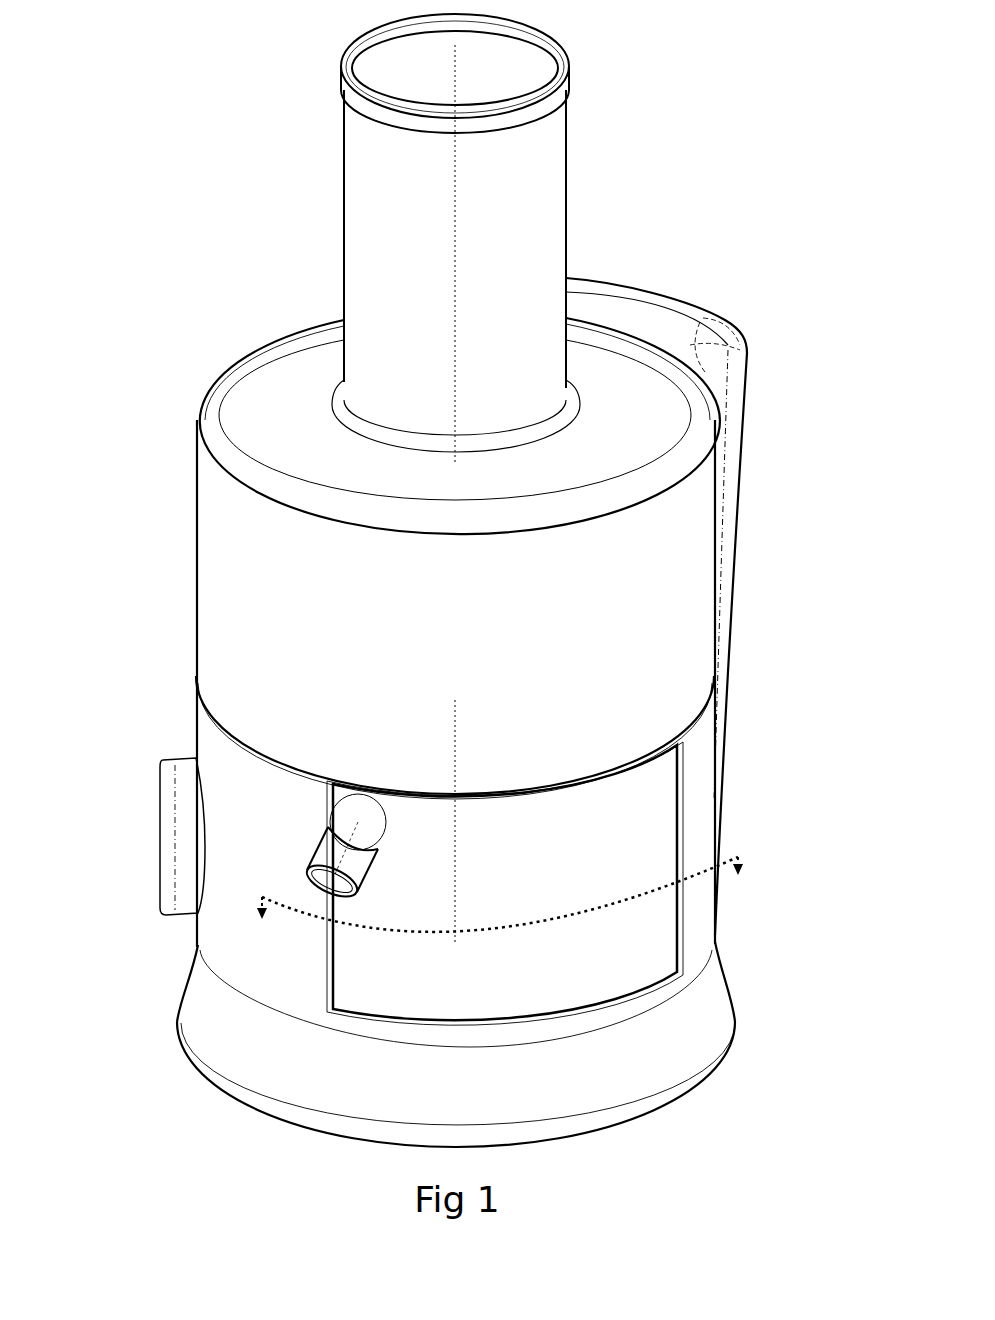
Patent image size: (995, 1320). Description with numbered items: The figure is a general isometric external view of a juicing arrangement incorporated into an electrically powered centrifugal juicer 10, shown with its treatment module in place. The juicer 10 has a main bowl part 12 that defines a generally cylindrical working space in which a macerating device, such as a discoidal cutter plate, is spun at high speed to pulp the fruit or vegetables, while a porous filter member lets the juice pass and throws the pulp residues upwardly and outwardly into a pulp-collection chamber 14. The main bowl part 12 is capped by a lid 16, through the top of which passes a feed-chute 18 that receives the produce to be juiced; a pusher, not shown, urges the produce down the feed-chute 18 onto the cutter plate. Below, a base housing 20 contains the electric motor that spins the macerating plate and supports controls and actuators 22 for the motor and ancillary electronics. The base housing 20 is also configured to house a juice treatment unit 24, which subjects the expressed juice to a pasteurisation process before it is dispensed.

The centrifugal juicer 10 is at (458, 580).
The main bowl part 12 is at (213, 540).
The pulp-collection chamber 14 is at (737, 378).
The lid 16 is at (627, 357).
The feed-chute 18 is at (537, 148).
The base housing 20 is at (247, 950).
The controls and actuators 22 is at (175, 840).
The juice treatment unit 24 is at (616, 928).